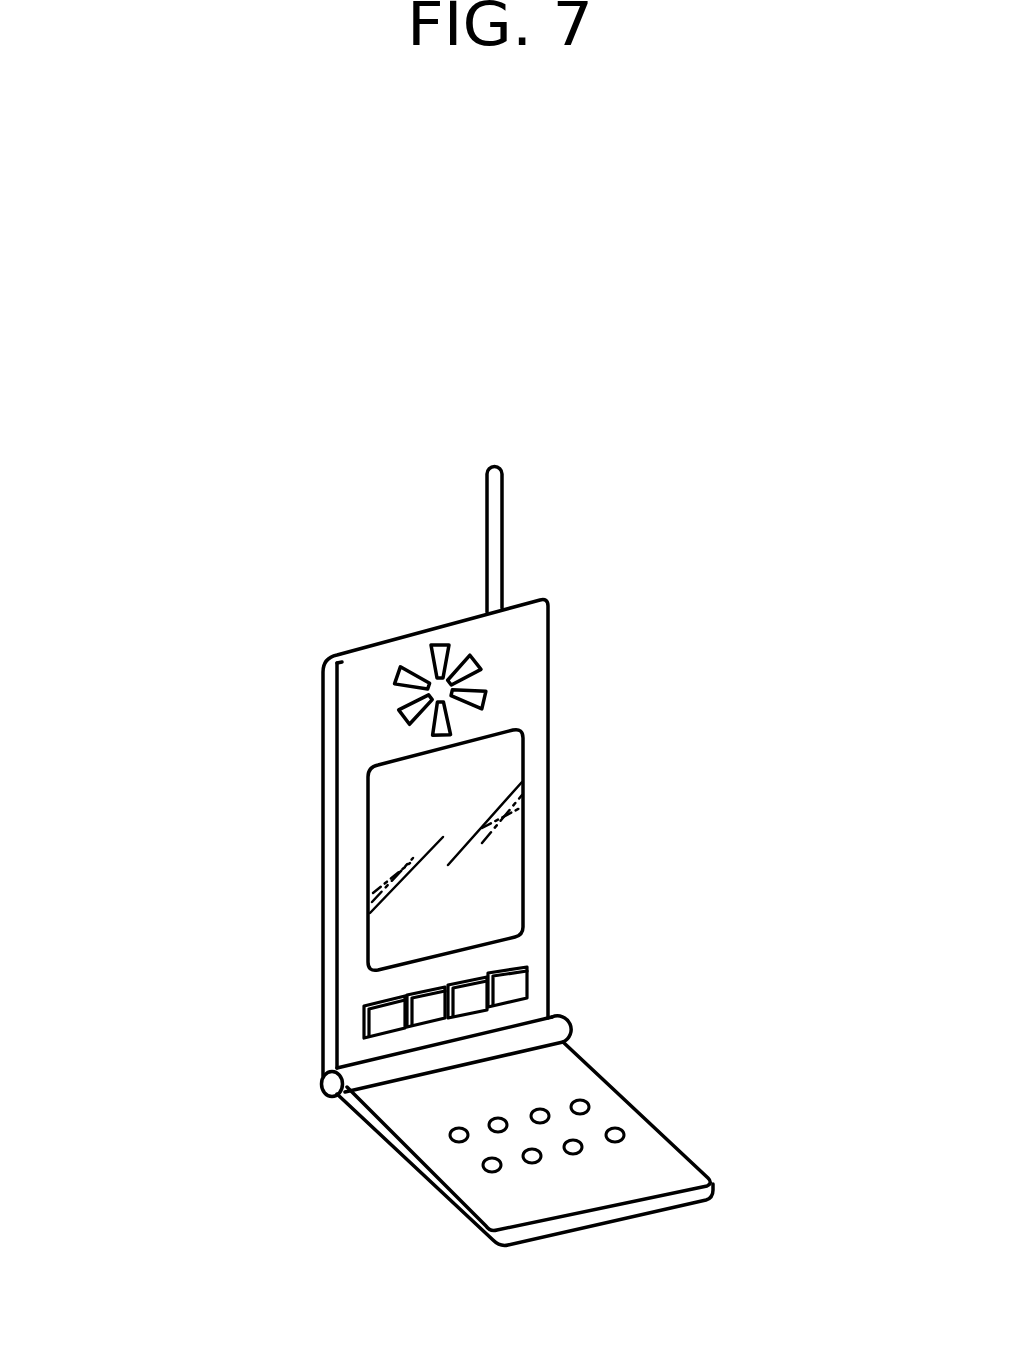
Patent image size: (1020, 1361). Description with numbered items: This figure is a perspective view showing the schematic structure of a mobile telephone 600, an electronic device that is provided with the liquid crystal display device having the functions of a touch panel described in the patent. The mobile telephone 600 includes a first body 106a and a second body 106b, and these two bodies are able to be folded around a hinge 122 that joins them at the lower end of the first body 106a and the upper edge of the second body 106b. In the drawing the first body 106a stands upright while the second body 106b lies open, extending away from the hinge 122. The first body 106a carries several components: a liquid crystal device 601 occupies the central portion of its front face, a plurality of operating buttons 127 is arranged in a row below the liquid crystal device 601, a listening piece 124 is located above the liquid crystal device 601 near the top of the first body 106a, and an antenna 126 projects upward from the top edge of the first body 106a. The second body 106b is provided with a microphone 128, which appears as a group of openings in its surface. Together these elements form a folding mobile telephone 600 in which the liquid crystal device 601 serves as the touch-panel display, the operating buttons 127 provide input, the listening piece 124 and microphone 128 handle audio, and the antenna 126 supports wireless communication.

The mobile telephone 600 is at (683, 743).
The first body 106a is at (283, 902).
The second body 106b is at (405, 1218).
The hinge 122 is at (322, 1082).
The listening piece 124 is at (412, 713).
The antenna 126 is at (503, 513).
The operating buttons 127 is at (520, 988).
The microphone 128 is at (622, 1131).
The liquid crystal device 601 is at (513, 867).